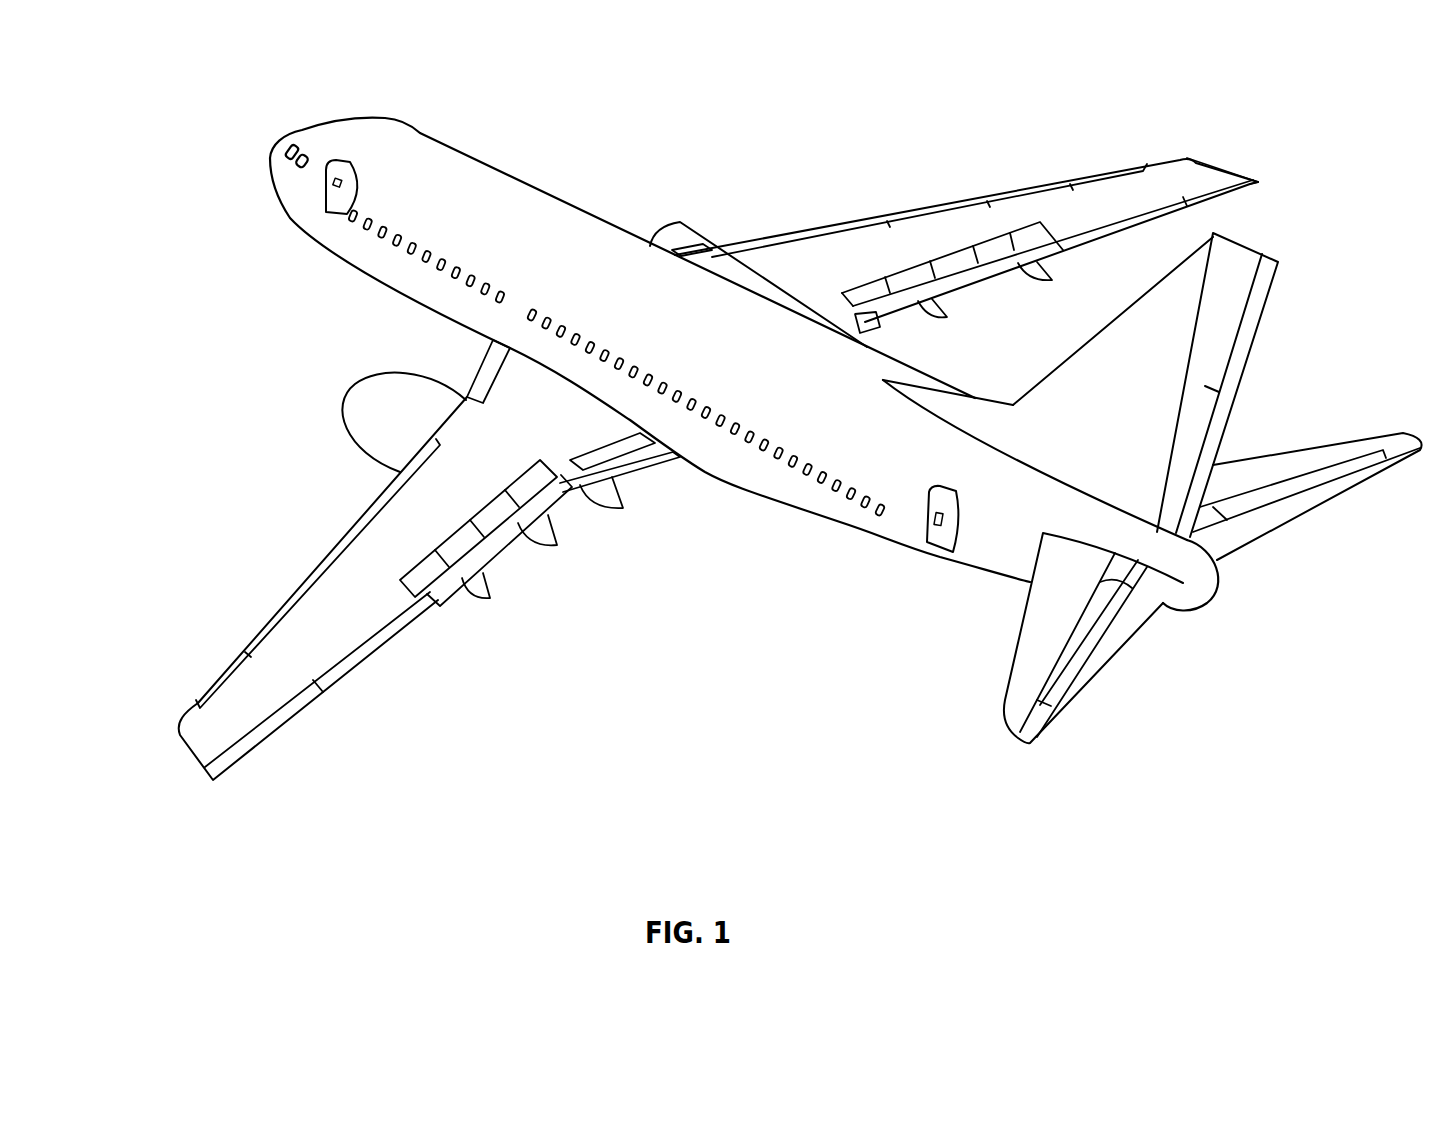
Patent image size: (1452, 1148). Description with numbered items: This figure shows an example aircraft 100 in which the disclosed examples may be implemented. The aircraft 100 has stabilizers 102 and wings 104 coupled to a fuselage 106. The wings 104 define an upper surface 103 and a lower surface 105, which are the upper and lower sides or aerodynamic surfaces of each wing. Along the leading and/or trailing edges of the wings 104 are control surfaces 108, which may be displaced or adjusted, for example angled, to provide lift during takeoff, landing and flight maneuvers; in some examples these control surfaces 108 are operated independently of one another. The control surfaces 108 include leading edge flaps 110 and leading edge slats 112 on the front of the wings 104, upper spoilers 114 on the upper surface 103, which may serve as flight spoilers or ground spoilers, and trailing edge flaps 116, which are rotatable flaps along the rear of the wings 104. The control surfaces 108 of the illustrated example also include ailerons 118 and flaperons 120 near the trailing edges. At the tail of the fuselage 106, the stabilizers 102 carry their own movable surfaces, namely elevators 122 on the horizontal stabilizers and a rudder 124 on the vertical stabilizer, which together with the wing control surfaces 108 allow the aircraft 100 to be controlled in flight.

The aircraft 100 is at (244, 98).
The stabilizers 102 is at (1070, 372).
The upper surface 103 is at (1192, 180).
The wings 104 is at (296, 562).
The lower surface 105 is at (1250, 188).
The fuselage 106 is at (498, 190).
The control surfaces 108 is at (826, 393).
The leading edge flaps 110 is at (490, 367).
The leading edge slats 112 is at (350, 533).
The upper spoilers 114 is at (523, 500).
The trailing edge flaps 116 is at (488, 557).
The ailerons 118 is at (357, 658).
The flaperons 120 is at (571, 447).
The elevators 122 is at (1280, 510).
The rudder 124 is at (1255, 343).